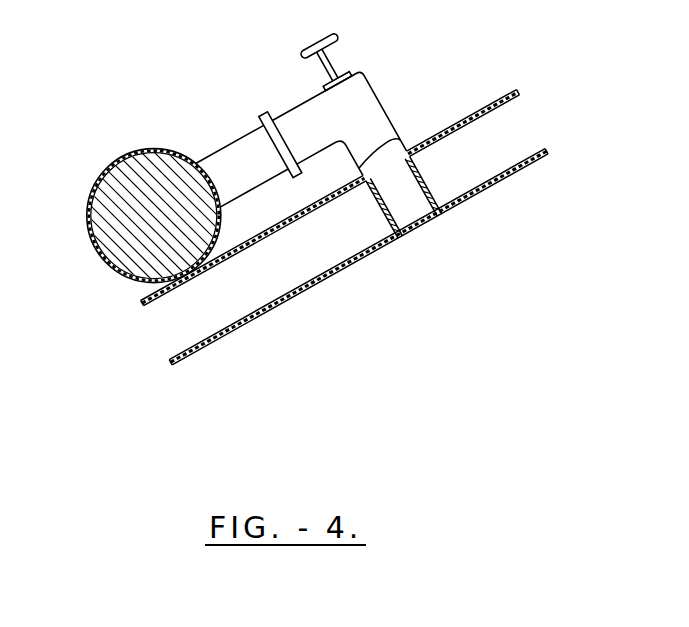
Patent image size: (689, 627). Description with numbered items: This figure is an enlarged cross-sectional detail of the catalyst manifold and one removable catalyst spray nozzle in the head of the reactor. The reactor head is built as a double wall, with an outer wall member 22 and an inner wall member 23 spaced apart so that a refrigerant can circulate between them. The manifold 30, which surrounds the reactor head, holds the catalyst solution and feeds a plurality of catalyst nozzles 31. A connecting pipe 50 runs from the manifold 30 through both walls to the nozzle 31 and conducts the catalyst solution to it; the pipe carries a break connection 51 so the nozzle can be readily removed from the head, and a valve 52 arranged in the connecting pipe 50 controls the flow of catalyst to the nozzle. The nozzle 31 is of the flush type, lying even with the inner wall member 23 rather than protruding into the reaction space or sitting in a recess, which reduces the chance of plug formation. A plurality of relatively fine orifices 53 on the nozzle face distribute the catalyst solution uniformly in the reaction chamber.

The outer wall member 22 is at (263, 313).
The inner wall member 23 is at (248, 247).
The manifold 30 is at (109, 171).
The catalyst nozzle 31 is at (434, 210).
The connecting pipe 50 is at (241, 137).
The break connection 51 is at (262, 113).
The valve 52 is at (337, 59).
The orifices 53 is at (416, 234).